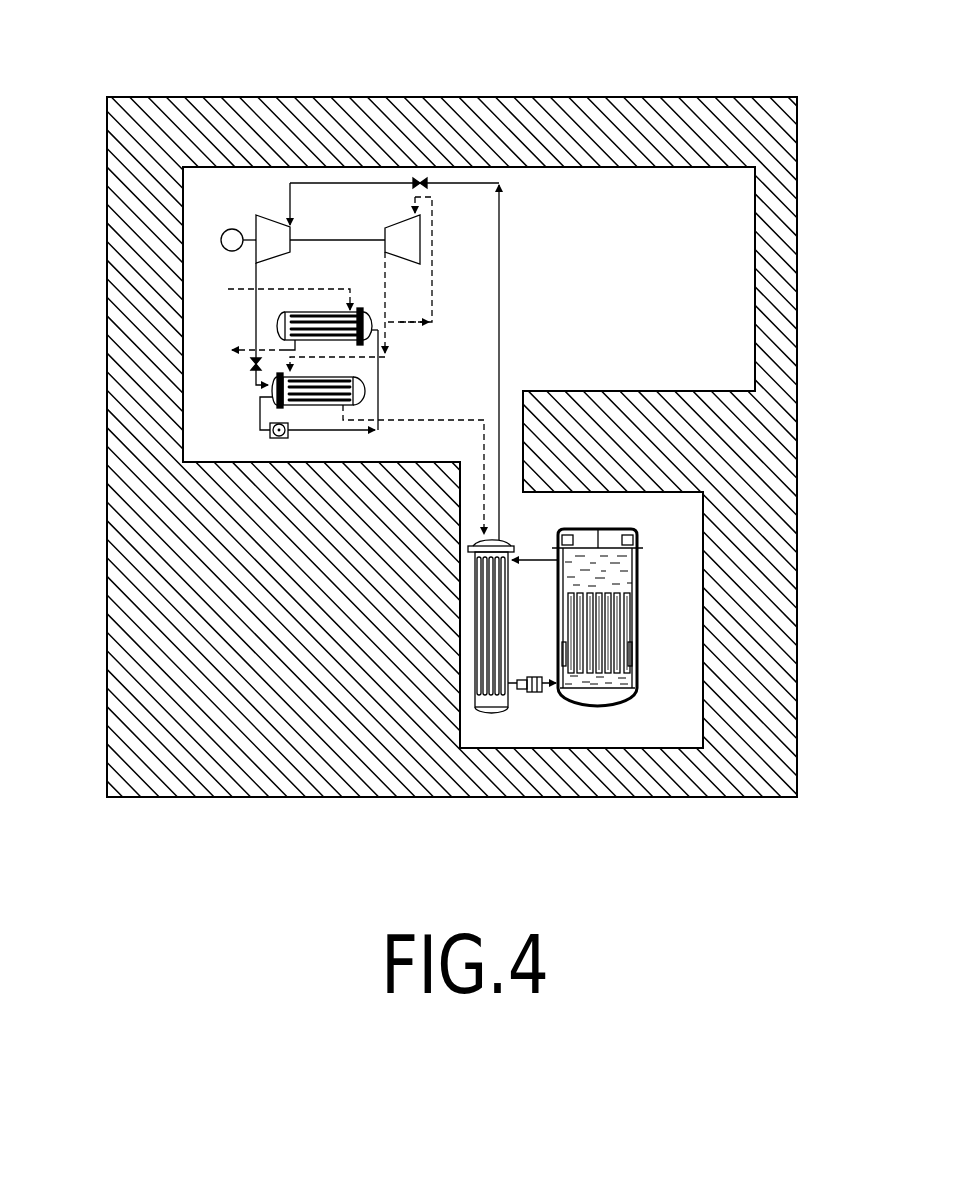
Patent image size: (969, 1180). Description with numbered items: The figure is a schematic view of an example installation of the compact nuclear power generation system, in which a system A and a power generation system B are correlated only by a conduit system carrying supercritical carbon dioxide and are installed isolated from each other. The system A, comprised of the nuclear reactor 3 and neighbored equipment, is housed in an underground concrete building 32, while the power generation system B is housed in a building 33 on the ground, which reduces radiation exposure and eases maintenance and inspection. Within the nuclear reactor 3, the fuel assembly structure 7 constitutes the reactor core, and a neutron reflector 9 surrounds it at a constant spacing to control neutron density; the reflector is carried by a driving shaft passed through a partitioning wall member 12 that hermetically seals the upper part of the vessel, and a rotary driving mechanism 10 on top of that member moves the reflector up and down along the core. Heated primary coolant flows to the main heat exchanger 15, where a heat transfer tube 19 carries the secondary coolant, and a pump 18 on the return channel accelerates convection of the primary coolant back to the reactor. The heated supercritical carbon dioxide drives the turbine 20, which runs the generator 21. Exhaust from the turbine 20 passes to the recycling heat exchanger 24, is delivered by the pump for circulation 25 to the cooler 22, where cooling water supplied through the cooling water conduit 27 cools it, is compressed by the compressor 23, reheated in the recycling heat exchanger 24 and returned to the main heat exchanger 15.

The nuclear reactor 3 is at (604, 623).
The fuel assembly structure 7 is at (576, 616).
The neutron reflector 9 is at (562, 650).
The rotary driving mechanism 10 is at (560, 540).
The partitioning wall member 12 is at (598, 529).
The main heat exchanger 15 is at (507, 642).
The pump 18 is at (530, 692).
The heat transfer tube 19 is at (505, 590).
The turbine 20 is at (265, 262).
The generator 21 is at (243, 228).
The cooler 22 is at (305, 312).
The compressor 23 is at (401, 225).
The recycling heat exchanger 24 is at (295, 405).
The pump for circulation 25 is at (285, 438).
The cooling water conduit 27 is at (340, 289).
The underground concrete building 32 is at (773, 550).
The building on the ground 33 is at (150, 207).
The system A is at (673, 712).
The power generation system B is at (260, 187).